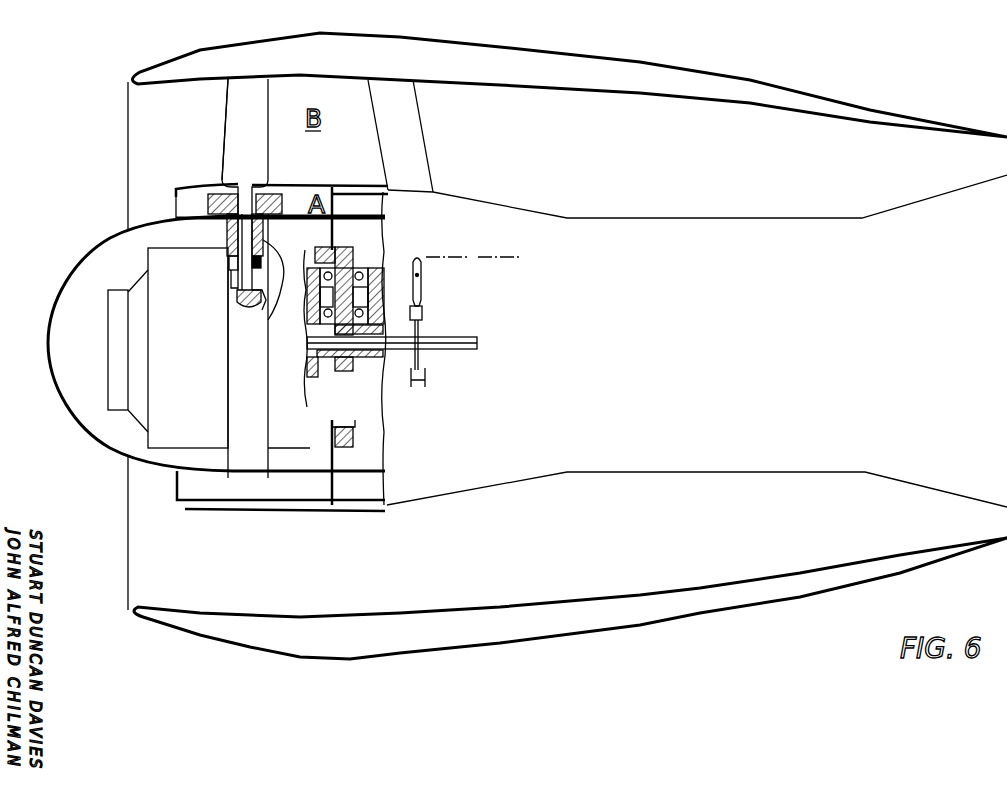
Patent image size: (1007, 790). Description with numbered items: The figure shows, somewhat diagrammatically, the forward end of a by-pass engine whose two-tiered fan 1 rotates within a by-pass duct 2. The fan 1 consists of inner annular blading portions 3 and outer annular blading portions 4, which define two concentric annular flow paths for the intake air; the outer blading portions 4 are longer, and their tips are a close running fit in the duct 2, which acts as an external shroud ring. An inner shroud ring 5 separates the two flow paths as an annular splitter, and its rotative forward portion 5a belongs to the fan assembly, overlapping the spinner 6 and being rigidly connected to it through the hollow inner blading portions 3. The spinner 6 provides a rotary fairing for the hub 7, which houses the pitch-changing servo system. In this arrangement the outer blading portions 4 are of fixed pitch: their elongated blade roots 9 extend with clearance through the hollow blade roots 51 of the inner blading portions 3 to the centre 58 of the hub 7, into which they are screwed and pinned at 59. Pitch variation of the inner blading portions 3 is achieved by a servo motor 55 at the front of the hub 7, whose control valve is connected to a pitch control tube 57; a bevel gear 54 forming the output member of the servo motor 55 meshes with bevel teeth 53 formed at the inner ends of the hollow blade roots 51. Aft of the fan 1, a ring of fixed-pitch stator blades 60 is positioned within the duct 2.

The fan 1 is at (221, 133).
The by-pass duct 2 is at (148, 68).
The inner annular blading portions 3 is at (208, 207).
The outer annular blading portions 4 is at (233, 106).
The shroud ring 5 is at (347, 188).
The forward portion of shroud ring 5a is at (188, 191).
The spinner 6 is at (67, 293).
The hub 7 is at (266, 226).
The blade roots 9 is at (228, 223).
The hollow blade roots 51 is at (229, 256).
The bevel teeth 53 is at (270, 262).
The bevel gear 54 is at (230, 274).
The servo motor 55 is at (155, 432).
The pitch control tube 57 is at (400, 358).
The centre of the hub 58 is at (264, 305).
The pin 59 is at (237, 308).
The stator blades 60 is at (413, 113).